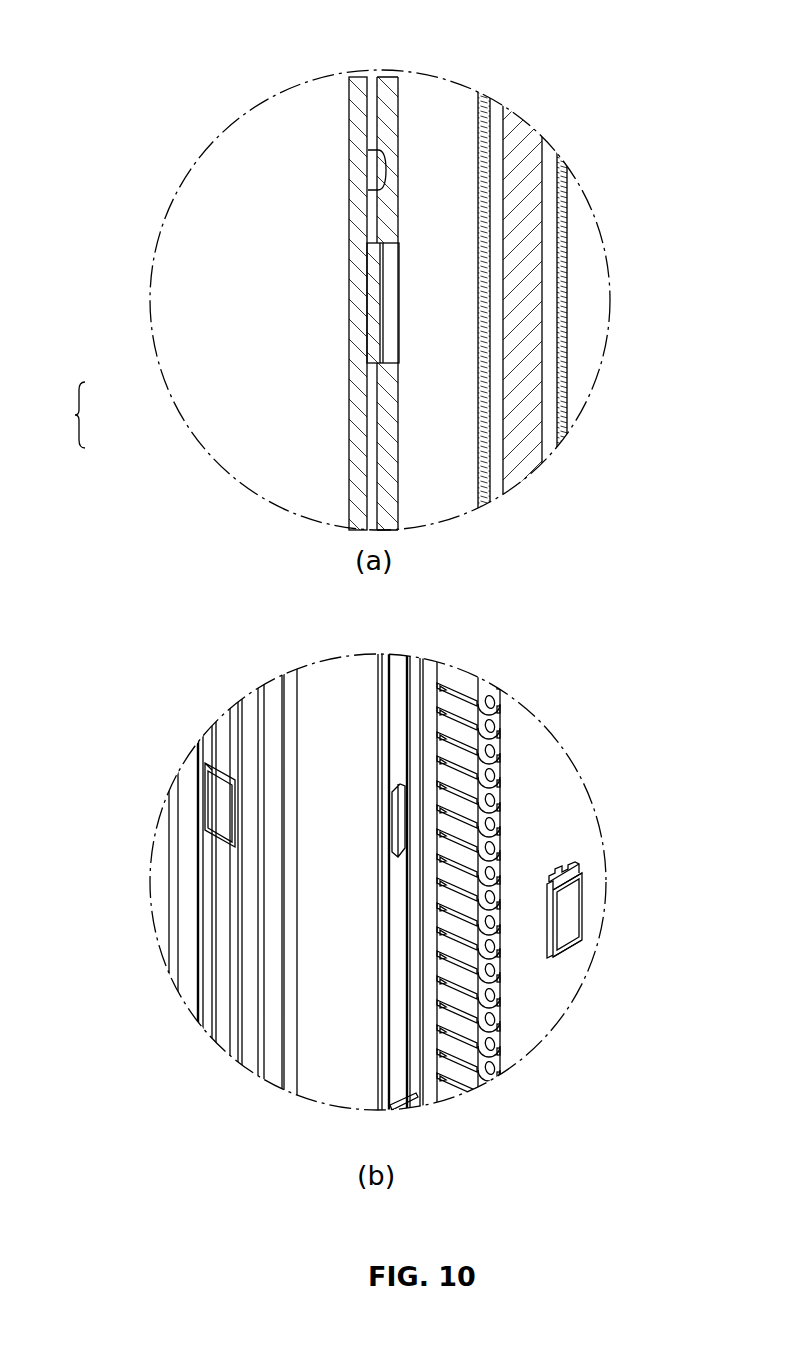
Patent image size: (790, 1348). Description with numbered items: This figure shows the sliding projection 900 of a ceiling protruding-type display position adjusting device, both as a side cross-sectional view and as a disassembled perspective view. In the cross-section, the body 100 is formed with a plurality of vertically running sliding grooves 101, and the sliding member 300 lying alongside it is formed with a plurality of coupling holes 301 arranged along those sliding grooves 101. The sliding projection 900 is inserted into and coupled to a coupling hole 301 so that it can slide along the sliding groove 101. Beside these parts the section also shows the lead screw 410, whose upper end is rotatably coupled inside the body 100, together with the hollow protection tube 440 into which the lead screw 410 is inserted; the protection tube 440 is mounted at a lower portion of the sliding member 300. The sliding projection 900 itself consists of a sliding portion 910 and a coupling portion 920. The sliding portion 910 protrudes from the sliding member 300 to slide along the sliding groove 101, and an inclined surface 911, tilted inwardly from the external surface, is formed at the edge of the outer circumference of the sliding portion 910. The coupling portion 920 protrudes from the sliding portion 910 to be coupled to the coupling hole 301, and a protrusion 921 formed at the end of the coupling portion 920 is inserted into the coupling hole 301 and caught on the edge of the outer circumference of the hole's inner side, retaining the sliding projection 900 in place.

The body 100 is at (358, 220).
The sliding groove 101 is at (372, 152).
The sliding member 300 is at (388, 100).
The coupling hole 301 is at (400, 248).
The lead screw 410 is at (518, 267).
The protection tube 440 is at (561, 317).
The sliding projection 900 is at (665, 829).
The sliding portion 910 is at (372, 315).
The inclined surface 911 is at (578, 884).
The coupling portion 920 is at (388, 345).
The protrusion 921 is at (561, 872).